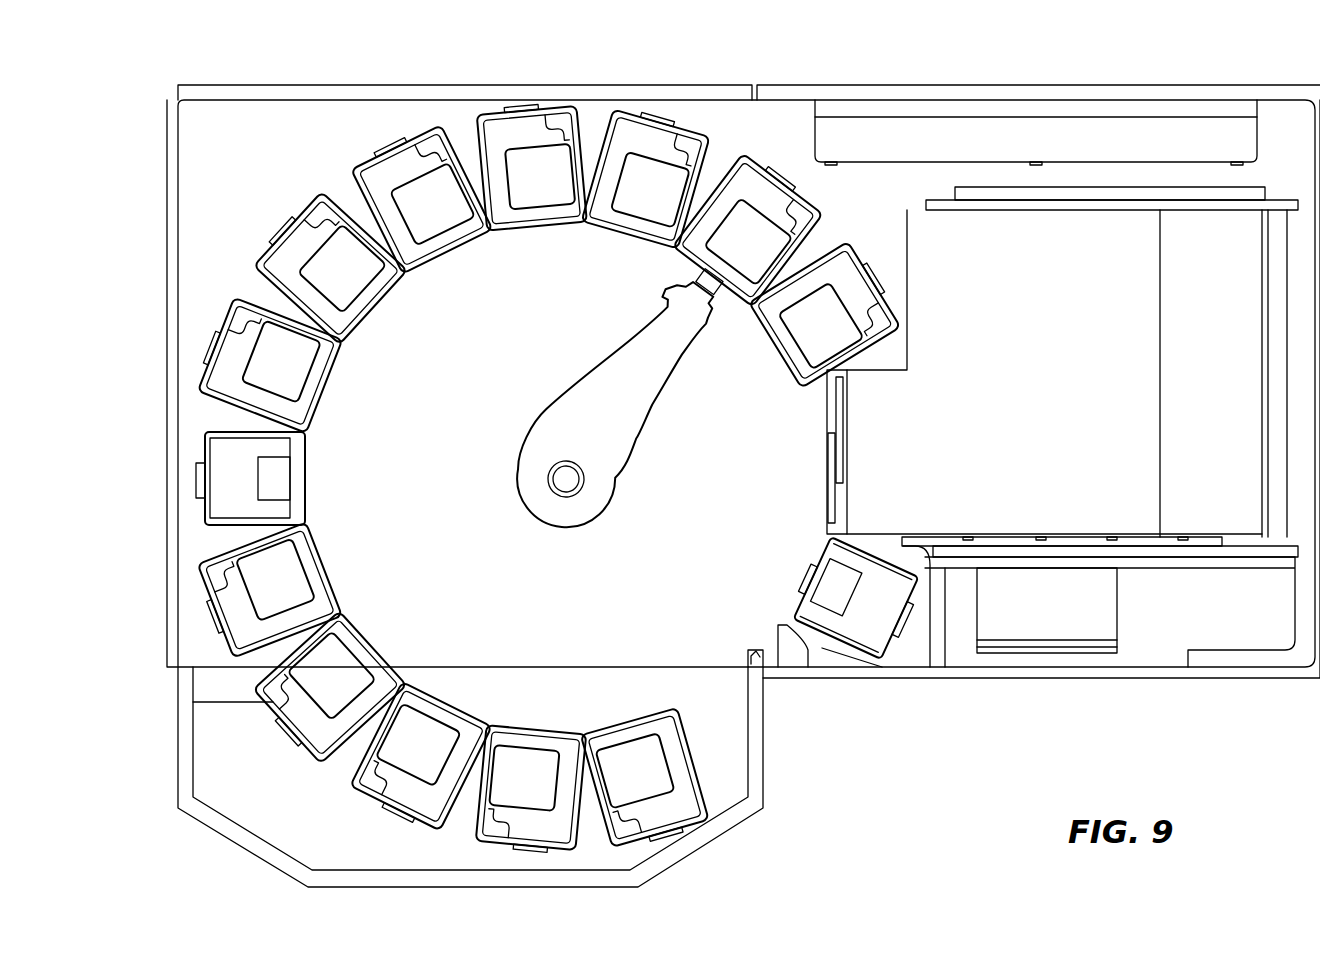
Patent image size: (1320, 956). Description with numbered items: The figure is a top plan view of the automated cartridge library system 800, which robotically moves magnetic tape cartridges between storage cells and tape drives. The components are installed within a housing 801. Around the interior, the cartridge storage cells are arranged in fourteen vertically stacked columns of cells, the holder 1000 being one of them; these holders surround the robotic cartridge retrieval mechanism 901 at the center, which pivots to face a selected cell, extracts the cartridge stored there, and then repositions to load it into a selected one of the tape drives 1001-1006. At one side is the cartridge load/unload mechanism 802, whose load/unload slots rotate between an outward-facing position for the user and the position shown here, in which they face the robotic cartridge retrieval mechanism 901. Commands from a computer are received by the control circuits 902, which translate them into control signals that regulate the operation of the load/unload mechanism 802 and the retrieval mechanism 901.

The automated cartridge library system 800 is at (848, 743).
The housing 801 is at (697, 85).
The cartridge load/unload mechanism 802 is at (790, 598).
The robotic cartridge retrieval mechanism 901 is at (593, 392).
The control circuits 902 is at (1097, 655).
The cartridge holder 1000 is at (330, 380).
The tape drives 1001-1006 is at (814, 481).